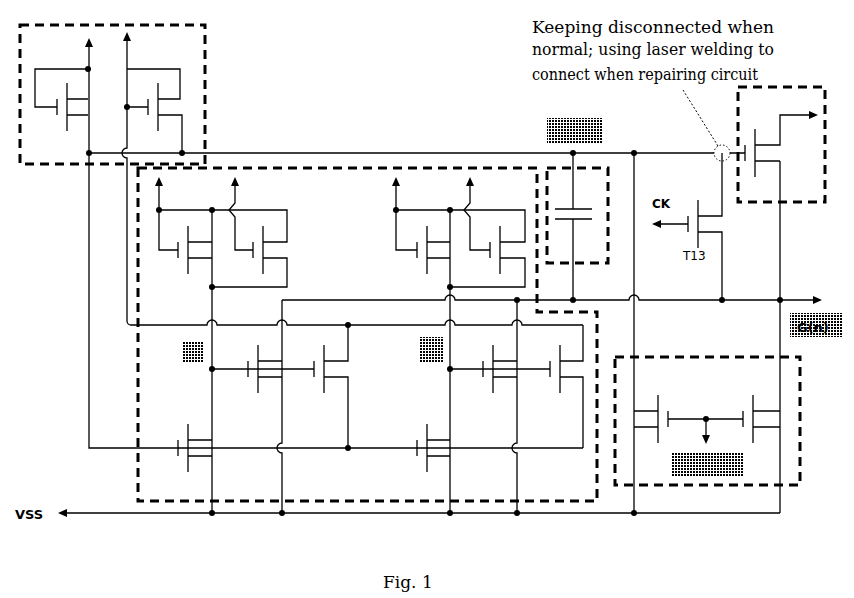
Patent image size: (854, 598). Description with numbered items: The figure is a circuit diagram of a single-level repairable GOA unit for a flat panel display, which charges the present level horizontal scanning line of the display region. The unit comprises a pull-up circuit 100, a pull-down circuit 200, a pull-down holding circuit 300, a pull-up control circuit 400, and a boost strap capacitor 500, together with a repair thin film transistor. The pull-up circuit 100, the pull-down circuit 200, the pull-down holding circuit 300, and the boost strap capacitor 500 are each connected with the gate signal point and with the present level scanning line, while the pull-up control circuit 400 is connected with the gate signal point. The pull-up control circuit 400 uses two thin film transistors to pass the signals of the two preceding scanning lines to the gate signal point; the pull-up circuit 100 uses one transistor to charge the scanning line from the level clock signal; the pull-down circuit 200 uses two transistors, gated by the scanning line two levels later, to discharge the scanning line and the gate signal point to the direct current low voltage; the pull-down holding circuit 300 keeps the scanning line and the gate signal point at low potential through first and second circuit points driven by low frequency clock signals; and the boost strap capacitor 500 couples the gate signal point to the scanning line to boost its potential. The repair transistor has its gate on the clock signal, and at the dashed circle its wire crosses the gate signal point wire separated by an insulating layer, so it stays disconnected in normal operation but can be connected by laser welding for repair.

The pull-up circuit 100 is at (758, 100).
The pull-down circuit 200 is at (788, 467).
The pull-down holding circuit 300 is at (153, 487).
The pull-up control circuit 400 is at (192, 98).
The boost strap capacitor 500 is at (560, 182).